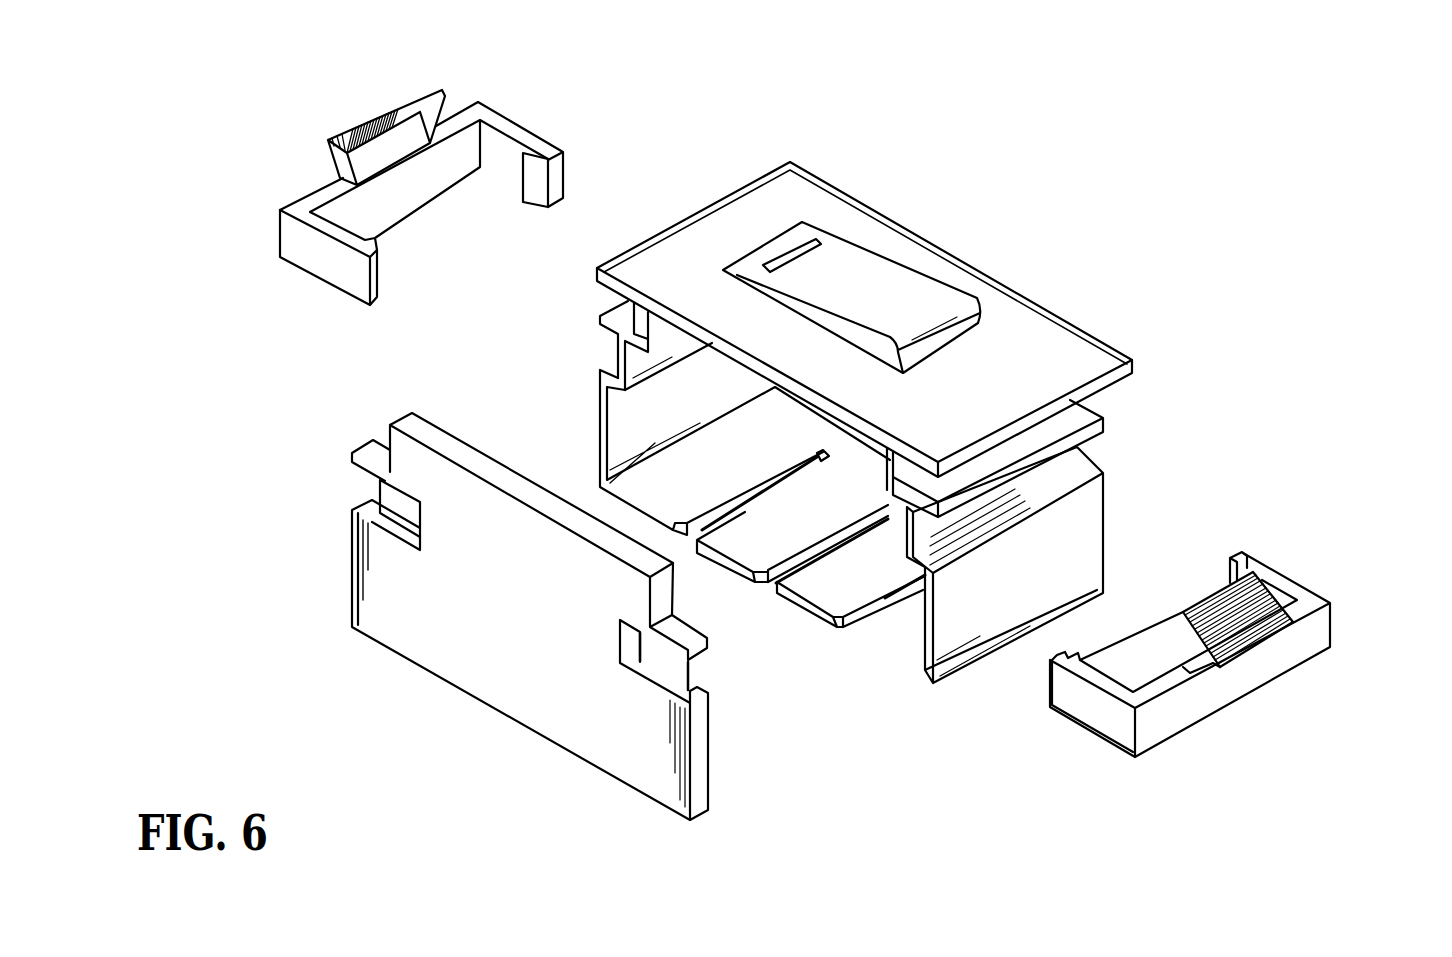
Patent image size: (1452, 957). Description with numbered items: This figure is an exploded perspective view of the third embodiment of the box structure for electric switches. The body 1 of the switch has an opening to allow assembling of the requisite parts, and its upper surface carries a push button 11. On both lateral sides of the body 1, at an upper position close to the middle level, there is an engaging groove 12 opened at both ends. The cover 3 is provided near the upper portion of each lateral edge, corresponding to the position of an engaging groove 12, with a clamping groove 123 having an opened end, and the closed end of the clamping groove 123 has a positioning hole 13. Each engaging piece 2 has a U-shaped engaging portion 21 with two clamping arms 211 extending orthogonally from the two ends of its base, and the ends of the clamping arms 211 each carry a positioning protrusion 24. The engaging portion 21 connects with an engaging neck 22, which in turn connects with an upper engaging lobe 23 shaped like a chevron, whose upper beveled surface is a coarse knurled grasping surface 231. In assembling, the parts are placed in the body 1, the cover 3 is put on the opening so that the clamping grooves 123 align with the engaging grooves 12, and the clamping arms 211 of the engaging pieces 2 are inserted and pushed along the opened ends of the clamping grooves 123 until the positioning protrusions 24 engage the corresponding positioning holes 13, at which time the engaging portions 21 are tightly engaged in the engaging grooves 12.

The body 1 is at (879, 455).
The push button 11 is at (870, 282).
The engaging groove 12 is at (925, 542).
The clamping groove 123 is at (1070, 465).
The positioning hole 13 is at (633, 647).
The engaging piece 2 is at (1215, 652).
The engaging portion 21 is at (1170, 727).
The clamping arm 211 is at (1083, 708).
The engaging neck 22 is at (1200, 667).
The engaging lobe 23 is at (1217, 667).
The knurled grasping surface 231 is at (1258, 528).
The positioning protrusion 24 is at (547, 154).
The cover 3 is at (516, 616).